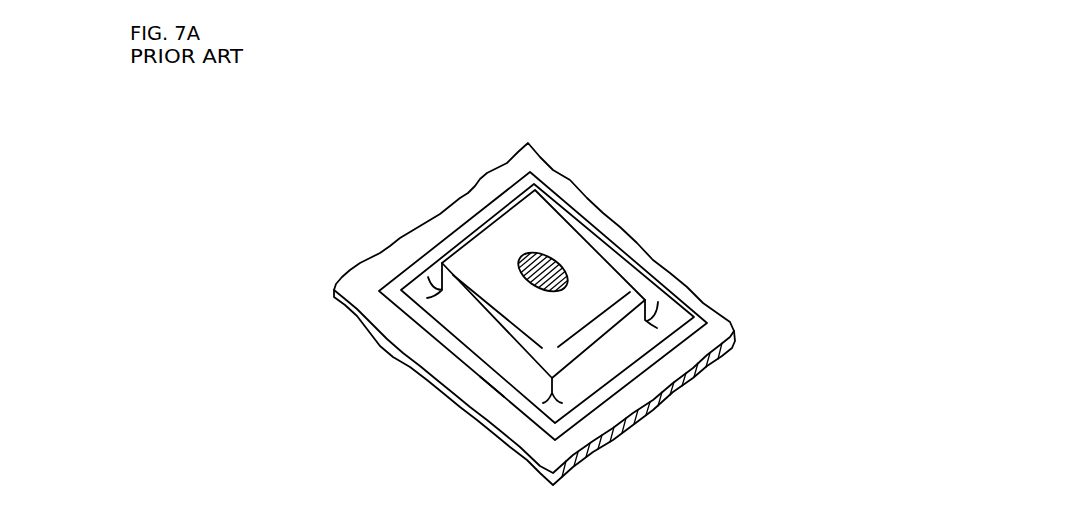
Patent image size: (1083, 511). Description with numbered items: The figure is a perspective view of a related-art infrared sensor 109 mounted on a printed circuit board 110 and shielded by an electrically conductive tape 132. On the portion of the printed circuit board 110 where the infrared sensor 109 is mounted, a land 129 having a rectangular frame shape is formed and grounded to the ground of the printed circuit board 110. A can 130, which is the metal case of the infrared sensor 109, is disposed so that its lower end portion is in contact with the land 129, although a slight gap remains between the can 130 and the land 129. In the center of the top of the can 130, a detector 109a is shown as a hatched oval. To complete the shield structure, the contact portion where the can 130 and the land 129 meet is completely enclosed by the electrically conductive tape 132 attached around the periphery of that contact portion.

The infrared sensor 109 is at (485, 226).
The detector 109a is at (557, 260).
The printed circuit board 110 is at (400, 325).
The land 129 is at (492, 377).
The can 130 is at (582, 310).
The electrically conductive tape 132 is at (672, 310).